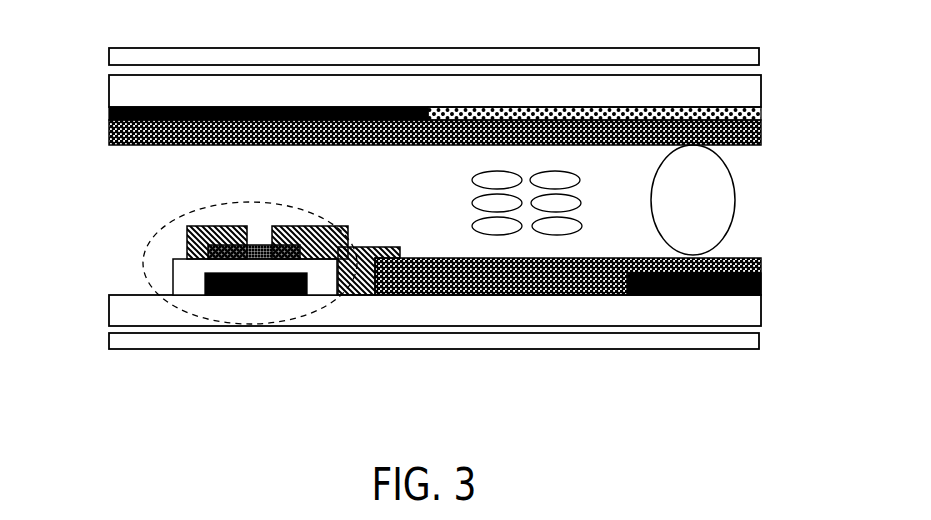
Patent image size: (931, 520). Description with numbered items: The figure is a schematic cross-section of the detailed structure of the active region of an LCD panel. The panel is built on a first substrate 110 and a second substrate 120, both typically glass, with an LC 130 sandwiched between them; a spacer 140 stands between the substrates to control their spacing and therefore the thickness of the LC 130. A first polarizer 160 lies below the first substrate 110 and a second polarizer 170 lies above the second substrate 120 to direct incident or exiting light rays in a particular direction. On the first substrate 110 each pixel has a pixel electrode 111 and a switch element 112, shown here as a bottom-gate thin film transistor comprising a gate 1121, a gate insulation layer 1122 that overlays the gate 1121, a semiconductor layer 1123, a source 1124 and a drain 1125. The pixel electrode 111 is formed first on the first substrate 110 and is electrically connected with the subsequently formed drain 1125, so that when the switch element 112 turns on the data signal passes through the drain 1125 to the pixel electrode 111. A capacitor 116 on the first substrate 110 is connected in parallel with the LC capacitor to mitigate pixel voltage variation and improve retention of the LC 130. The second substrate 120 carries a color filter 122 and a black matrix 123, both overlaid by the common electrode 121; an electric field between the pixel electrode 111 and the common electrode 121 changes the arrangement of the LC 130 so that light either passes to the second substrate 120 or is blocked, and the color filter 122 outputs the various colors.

The first substrate 110 is at (435, 310).
The pixel electrode 111 is at (762, 263).
The switch element 112 is at (356, 288).
The gate 1121 is at (296, 293).
The gate insulation layer 1122 is at (193, 288).
The semiconductor layer 1123 is at (188, 244).
The source 1124 is at (226, 226).
The drain 1125 is at (310, 226).
The capacitor 116 is at (762, 290).
The second substrate 120 is at (435, 91).
The common electrode 121 is at (762, 135).
The color filter 122 is at (762, 113).
The black matrix 123 is at (110, 112).
The LC 130 is at (474, 220).
The spacer 140 is at (693, 200).
The first polarizer 160 is at (762, 340).
The second polarizer 170 is at (760, 55).